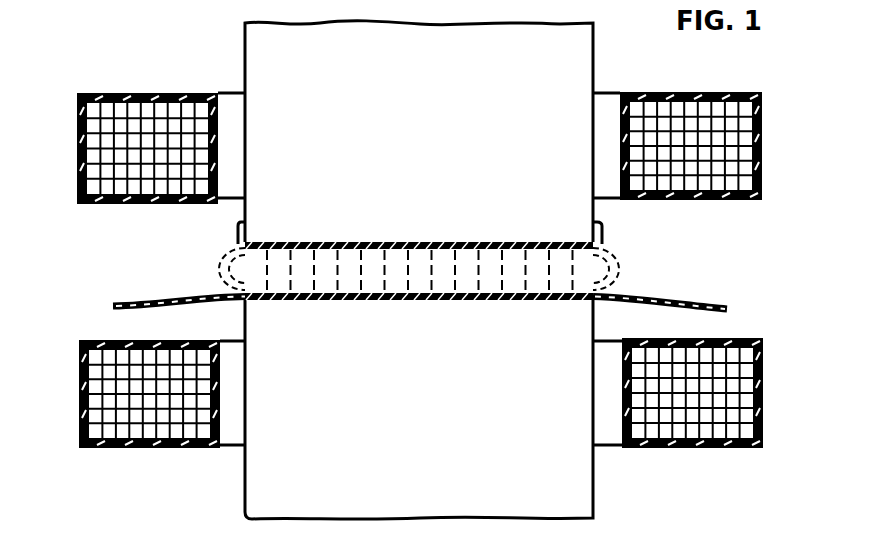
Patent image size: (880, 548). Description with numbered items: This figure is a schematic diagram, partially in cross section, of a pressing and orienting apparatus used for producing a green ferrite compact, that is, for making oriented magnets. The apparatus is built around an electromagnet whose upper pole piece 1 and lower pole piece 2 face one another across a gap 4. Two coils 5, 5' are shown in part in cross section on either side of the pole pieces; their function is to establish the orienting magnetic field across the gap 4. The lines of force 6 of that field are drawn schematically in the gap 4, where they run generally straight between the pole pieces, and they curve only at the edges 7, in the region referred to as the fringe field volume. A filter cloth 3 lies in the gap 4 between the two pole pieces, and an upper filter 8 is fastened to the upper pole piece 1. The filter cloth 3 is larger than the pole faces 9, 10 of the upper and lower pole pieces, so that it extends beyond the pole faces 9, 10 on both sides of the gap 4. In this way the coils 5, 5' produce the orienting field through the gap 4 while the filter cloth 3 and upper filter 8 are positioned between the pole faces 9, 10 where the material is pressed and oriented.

The upper pole piece 1 is at (262, 62).
The lower pole piece 2 is at (270, 487).
The filter cloth 3 is at (682, 297).
The gap 4 is at (463, 260).
The coil 5 is at (435, 147).
The coil 5' is at (439, 393).
The lines of force 6 is at (385, 270).
The edges 7 is at (230, 249).
The upper filter 8 is at (603, 236).
The pole face 9 is at (499, 243).
The pole face 10 is at (496, 298).